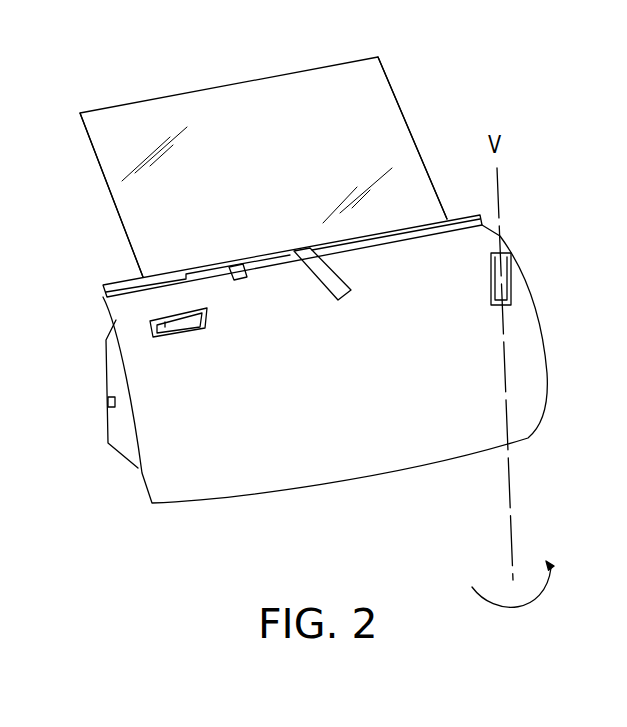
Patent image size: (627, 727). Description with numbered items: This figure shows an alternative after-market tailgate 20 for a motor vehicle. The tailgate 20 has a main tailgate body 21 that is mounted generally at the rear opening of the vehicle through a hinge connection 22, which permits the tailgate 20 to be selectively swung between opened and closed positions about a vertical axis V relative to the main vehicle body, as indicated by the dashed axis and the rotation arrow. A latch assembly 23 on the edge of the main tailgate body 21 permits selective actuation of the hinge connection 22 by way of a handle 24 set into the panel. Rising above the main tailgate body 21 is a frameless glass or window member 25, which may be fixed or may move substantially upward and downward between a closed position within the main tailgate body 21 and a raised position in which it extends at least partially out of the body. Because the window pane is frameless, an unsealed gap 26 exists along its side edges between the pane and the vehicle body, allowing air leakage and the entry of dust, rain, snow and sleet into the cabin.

The tailgate 20 is at (414, 49).
The main tailgate body 21 is at (163, 473).
The hinge connection 22 is at (512, 286).
The latch assembly 23 is at (108, 404).
The handle 24 is at (150, 322).
The frameless glass or window member 25 is at (242, 100).
The unsealed gap 26 is at (92, 223).